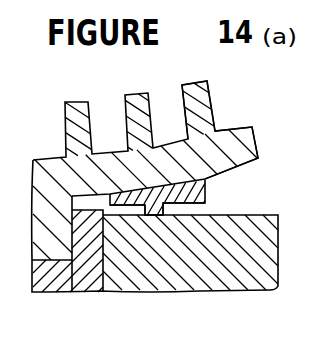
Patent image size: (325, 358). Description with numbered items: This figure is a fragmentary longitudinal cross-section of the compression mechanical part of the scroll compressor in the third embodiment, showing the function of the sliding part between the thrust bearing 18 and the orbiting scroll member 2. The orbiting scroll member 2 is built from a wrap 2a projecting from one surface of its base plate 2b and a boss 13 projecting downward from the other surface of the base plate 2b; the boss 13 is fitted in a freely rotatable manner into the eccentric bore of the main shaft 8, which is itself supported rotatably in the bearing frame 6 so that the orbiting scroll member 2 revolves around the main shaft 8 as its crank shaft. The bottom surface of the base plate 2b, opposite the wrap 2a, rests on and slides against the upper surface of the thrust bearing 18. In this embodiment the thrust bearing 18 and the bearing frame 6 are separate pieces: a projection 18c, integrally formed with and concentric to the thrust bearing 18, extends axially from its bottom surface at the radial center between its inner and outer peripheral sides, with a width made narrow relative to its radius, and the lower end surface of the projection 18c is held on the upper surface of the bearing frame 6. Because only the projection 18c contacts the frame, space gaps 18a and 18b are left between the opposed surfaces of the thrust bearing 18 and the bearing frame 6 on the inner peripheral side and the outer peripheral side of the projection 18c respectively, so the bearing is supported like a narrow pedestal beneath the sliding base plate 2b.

The orbiting scroll member 2 is at (166, 157).
The wrap 2a is at (198, 115).
The base plate 2b is at (238, 150).
The bearing frame 6 is at (270, 288).
The main shaft 8 is at (80, 277).
The boss 13 is at (50, 240).
The thrust bearing 18 is at (199, 254).
The space gap 18a is at (143, 213).
The space gap 18b is at (193, 208).
The projection 18c is at (165, 213).